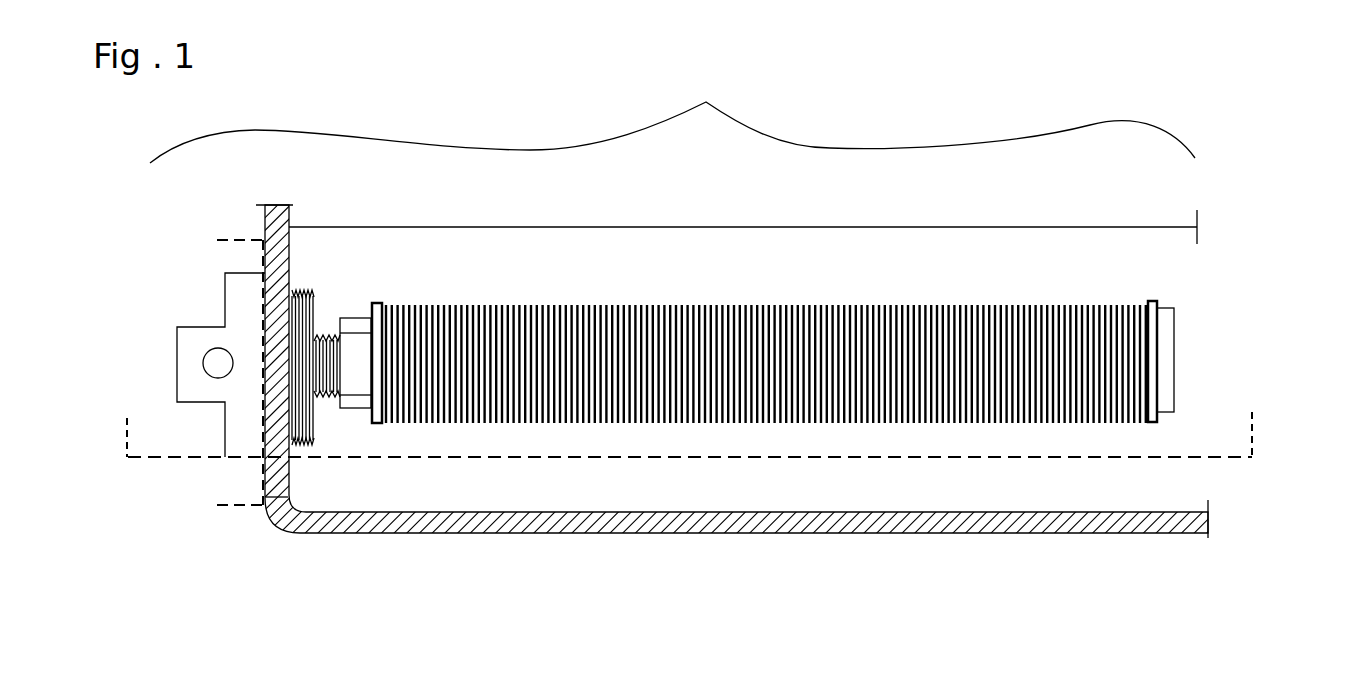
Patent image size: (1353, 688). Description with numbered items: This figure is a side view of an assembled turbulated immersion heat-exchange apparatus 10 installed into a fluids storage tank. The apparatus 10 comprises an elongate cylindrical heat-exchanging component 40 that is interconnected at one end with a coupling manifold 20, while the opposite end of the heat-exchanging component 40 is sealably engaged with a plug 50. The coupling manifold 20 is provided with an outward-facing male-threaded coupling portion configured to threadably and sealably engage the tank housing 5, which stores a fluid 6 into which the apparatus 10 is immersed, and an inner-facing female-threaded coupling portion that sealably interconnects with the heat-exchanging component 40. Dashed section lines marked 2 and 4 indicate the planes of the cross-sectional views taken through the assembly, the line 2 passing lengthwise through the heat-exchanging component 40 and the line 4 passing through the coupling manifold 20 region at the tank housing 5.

The turbulated submersible heat-exchange apparatus 10 is at (672, 116).
The tank housing 5 is at (853, 533).
The coupling manifold 20 is at (152, 341).
The fluid 6 is at (643, 278).
The heat-exchanging component 40 is at (1083, 375).
The plug 50 is at (1175, 322).
The section line 2- 2 is at (691, 421).
The section line 4- 4 is at (231, 375).